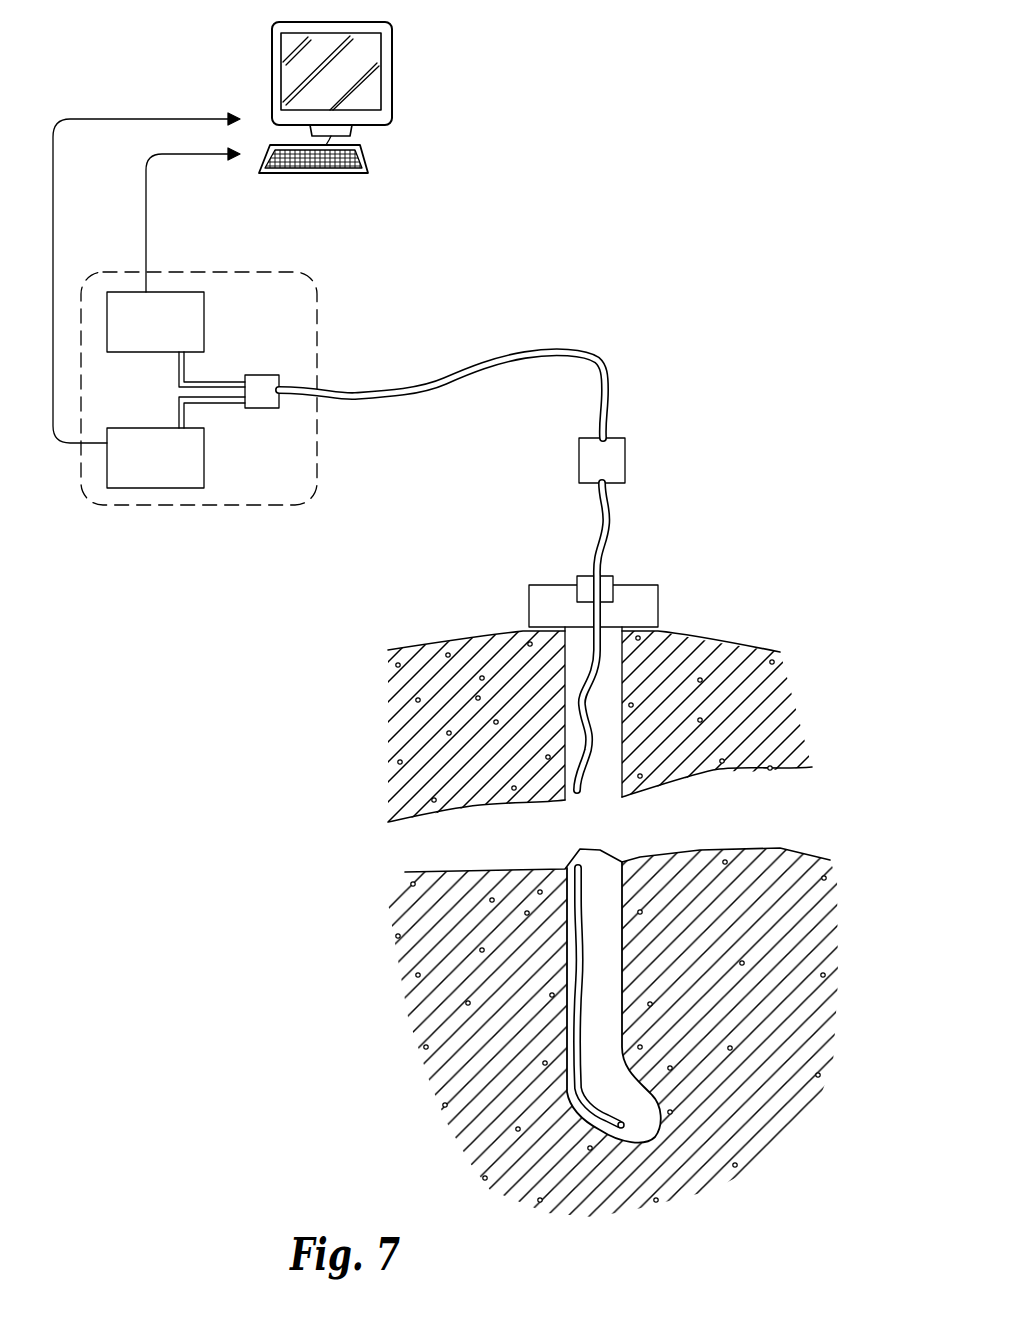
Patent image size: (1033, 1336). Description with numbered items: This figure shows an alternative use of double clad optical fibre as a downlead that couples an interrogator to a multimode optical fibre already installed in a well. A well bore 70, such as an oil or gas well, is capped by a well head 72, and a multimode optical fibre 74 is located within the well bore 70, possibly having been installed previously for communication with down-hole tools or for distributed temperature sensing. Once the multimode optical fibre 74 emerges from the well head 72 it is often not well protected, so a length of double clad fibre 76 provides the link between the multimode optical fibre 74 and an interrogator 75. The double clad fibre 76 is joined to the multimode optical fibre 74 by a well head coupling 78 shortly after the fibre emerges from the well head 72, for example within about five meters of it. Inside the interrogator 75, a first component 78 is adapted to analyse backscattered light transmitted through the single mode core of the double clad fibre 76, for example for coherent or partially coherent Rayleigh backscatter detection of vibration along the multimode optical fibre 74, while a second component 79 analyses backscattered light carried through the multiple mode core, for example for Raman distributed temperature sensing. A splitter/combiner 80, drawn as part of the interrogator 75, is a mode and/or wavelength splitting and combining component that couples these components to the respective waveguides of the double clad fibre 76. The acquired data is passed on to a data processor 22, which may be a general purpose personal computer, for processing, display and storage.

The data processor 22 is at (392, 37).
The well bore 70 is at (626, 788).
The well head 72 is at (658, 600).
The multimode optical fibre 74 is at (577, 1065).
The interrogator 75 is at (265, 506).
The double clad fibre 76 is at (413, 396).
The well head coupling / first component 78 is at (183, 290).
The second component 79 is at (113, 488).
The splitter/combiner 80 is at (270, 375).